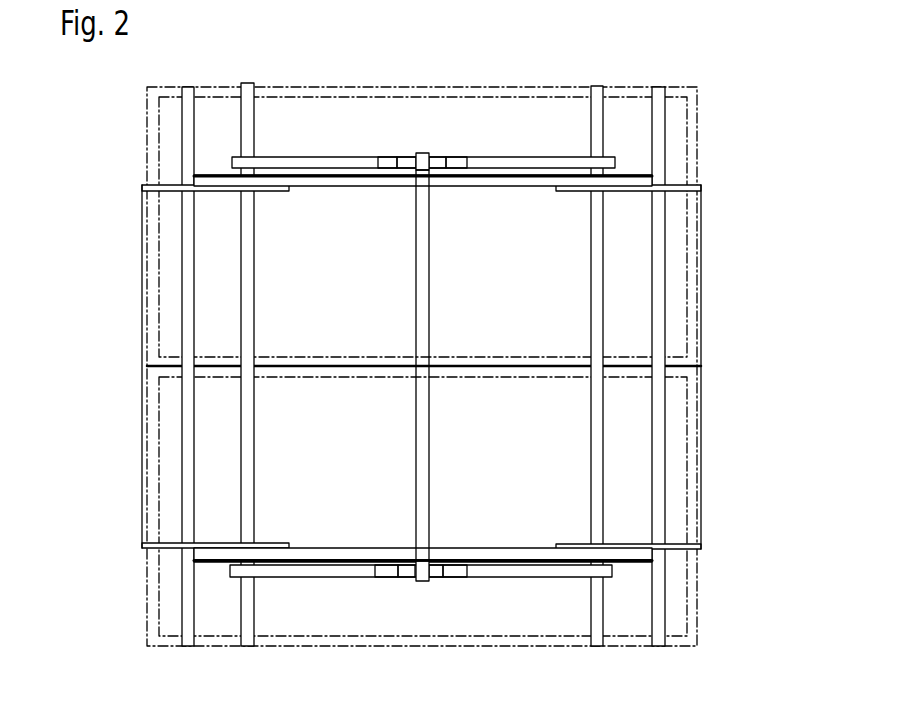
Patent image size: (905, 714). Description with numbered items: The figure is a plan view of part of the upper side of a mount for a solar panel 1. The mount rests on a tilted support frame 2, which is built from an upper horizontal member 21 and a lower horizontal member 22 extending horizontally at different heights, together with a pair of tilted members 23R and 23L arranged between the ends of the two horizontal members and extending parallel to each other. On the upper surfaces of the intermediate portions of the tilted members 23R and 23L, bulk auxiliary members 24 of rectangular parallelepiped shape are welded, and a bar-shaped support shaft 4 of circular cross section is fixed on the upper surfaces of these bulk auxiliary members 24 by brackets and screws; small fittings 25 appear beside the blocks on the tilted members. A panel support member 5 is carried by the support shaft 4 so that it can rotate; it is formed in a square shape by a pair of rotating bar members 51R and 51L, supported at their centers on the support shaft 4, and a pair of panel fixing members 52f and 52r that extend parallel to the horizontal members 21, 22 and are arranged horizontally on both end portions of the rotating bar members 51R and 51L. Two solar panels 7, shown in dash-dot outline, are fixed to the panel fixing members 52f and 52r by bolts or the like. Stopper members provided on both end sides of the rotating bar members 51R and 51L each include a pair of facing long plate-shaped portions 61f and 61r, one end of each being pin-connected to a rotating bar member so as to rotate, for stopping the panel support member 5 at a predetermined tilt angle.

The mount for a solar panel 1 is at (766, 188).
The tilted support frame 2 is at (517, 577).
The support shaft 4 is at (425, 297).
The panel support member 5 is at (664, 449).
The solar panel 7 is at (695, 92).
The upper horizontal member 21 is at (595, 263).
The lower horizontal member 22 is at (246, 292).
The tilted member 23L is at (365, 157).
The tilted member 23R is at (352, 578).
The bulk auxiliary member 24 is at (388, 157).
The slider 25 is at (438, 160).
The rotating bar member 51L is at (462, 186).
The rotating bar member 51R is at (510, 548).
The panel fixing member 52f is at (188, 290).
The panel fixing member 52r is at (701, 301).
The long plate-shaped portion 61f is at (210, 193).
The long plate-shaped portion 61r is at (630, 193).